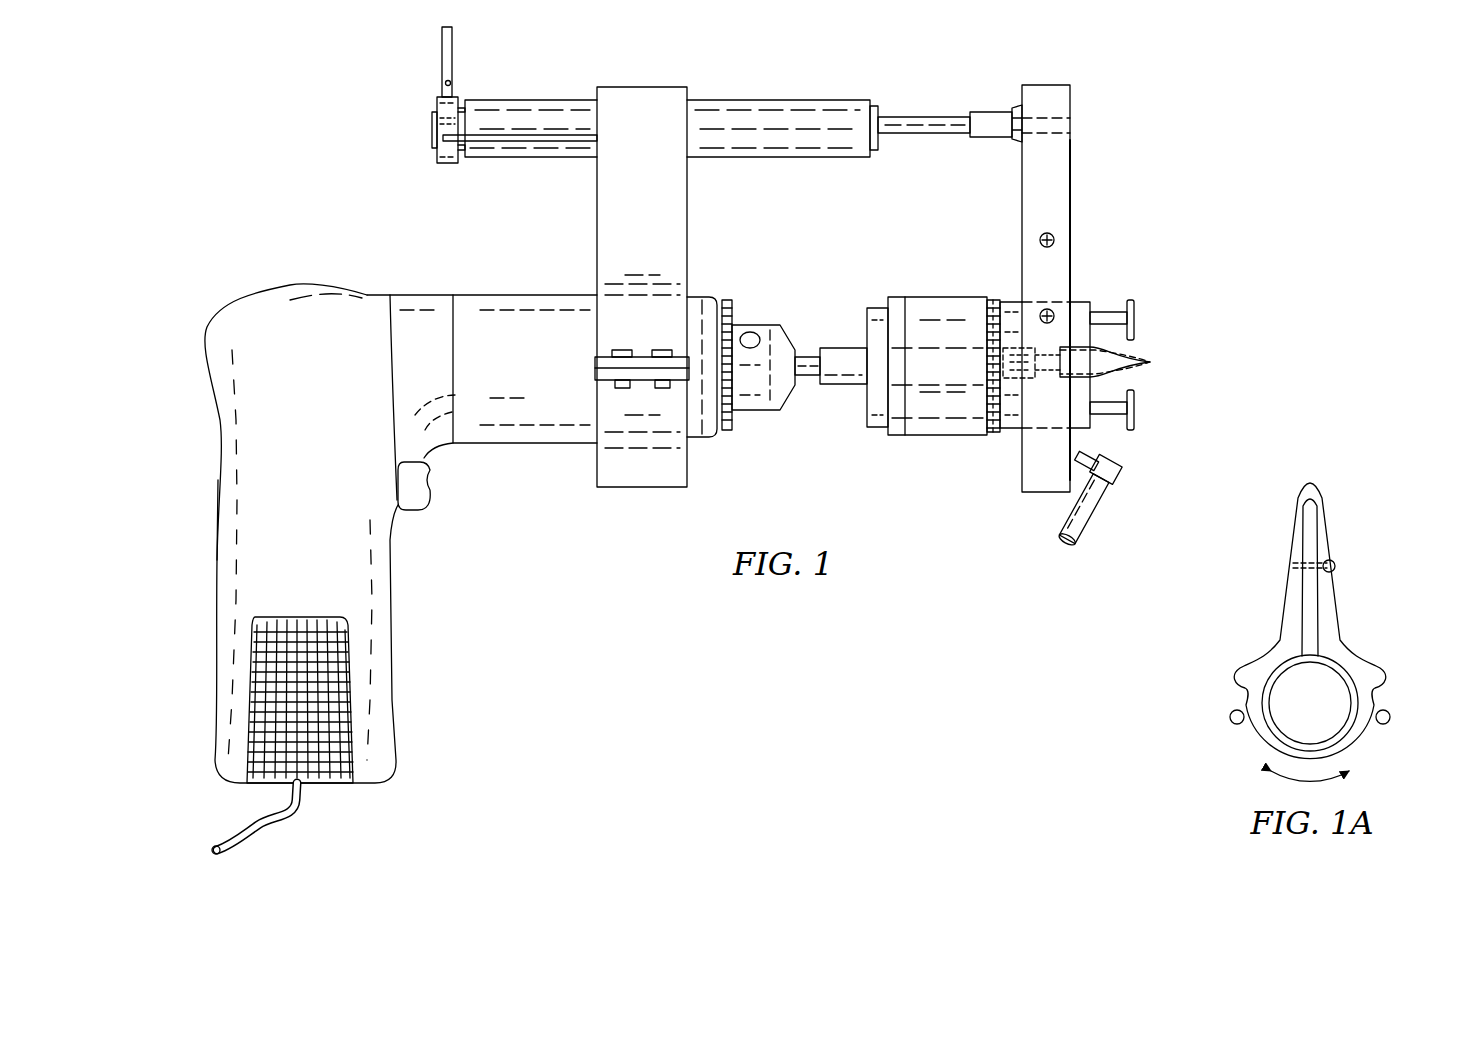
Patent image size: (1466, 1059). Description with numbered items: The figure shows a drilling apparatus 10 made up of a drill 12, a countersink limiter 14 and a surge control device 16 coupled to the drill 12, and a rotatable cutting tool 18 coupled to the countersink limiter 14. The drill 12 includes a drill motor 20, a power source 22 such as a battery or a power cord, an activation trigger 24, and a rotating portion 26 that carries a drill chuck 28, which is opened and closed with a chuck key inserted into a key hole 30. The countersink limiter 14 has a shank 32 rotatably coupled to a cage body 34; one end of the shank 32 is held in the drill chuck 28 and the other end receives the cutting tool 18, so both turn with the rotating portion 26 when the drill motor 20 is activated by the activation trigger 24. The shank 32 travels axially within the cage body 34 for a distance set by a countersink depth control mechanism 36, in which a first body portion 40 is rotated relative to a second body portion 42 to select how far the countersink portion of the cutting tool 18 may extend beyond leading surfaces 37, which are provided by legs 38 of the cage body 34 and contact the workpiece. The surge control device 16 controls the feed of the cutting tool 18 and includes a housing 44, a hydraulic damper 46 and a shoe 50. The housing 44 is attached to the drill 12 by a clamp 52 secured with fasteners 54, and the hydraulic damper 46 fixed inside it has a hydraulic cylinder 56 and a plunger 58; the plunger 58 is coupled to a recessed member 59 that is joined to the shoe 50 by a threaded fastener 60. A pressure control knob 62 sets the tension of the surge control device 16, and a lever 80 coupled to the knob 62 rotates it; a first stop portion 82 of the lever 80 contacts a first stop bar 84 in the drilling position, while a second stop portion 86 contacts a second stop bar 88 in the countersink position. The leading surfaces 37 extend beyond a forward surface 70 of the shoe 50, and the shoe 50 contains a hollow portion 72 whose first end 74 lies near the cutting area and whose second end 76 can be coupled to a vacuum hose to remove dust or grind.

In FIG. 1, the drilling apparatus 10 is at (233, 210).
In FIG. 1, the drill 12 is at (235, 335).
In FIG. 1, the countersink limiter 14 is at (965, 478).
In FIG. 1, the surge control device 16 is at (928, 95).
In FIG. 1, the rotatable cutting tool 18 is at (1132, 355).
In FIG. 1, the drill motor 20 is at (262, 409).
In FIG. 1, the power source 22 is at (328, 770).
In FIG. 1, the activation trigger 24 is at (432, 495).
In FIG. 1, the rotating portion 26 is at (755, 405).
In FIG. 1, the drill chuck 28 is at (765, 325).
In FIG. 1, the key hole 30 is at (752, 332).
In FIG. 1, the shank 32 is at (838, 385).
In FIG. 1, the cage body 34 is at (880, 425).
In FIG. 1, the countersink depth control mechanism 36 is at (1008, 290).
In FIG. 1, the leading surfaces 37 is at (1134, 305).
In FIG. 1, the legs 38 is at (1105, 310).
In FIG. 1, the first body portion 40 is at (993, 430).
In FIG. 1, the second body portion 42 is at (940, 430).
In FIG. 1, the housing 44 is at (622, 105).
In FIG. 1, the hydraulic damper 46 is at (768, 118).
In FIG. 1, the shoe 50 is at (1063, 180).
In FIG. 1, the clamp 52 is at (605, 362).
In FIG. 1, the fasteners 54 is at (662, 348).
In FIG. 1, the hydraulic cylinder 56 is at (848, 112).
In FIG. 1, the plunger 58 is at (908, 135).
In FIG. 1, the recessed member 59 is at (988, 138).
In FIG. 1, the threaded fastener 60 is at (1015, 105).
In FIG. 1, the pressure control knob 62 is at (432, 118).
In FIG. 1A, the pressure control knob 62 is at (1350, 735).
In FIG. 1, the forward surface 70 is at (1072, 228).
In FIG. 1, the hollow portion 72 is at (1095, 505).
In FIG. 1, the first end 74 is at (1122, 462).
In FIG. 1, the second end 76 is at (1088, 528).
In FIG. 1, the lever 80 is at (440, 55).
In FIG. 1A, the lever 80 is at (1328, 604).
In FIG. 1A, the first stop portion 82 is at (1240, 668).
In FIG. 1A, the first stop bar 84 is at (1230, 717).
In FIG. 1, the second stop portion 86 is at (444, 128).
In FIG. 1A, the second stop portion 86 is at (1378, 668).
In FIG. 1, the second stop bar 88 is at (520, 142).
In FIG. 1A, the second stop bar 88 is at (1390, 717).